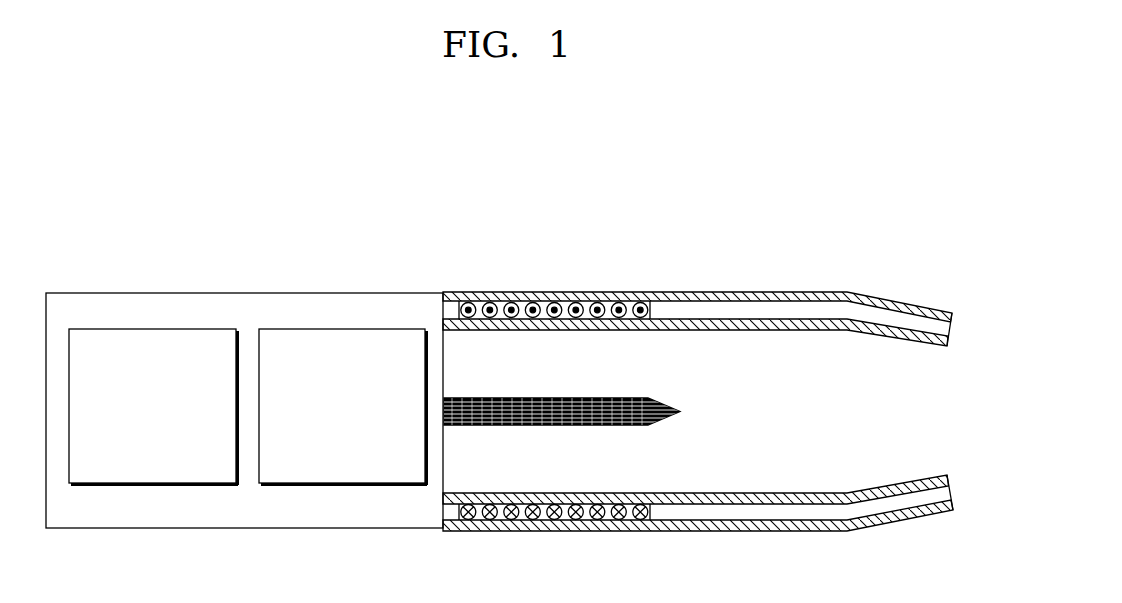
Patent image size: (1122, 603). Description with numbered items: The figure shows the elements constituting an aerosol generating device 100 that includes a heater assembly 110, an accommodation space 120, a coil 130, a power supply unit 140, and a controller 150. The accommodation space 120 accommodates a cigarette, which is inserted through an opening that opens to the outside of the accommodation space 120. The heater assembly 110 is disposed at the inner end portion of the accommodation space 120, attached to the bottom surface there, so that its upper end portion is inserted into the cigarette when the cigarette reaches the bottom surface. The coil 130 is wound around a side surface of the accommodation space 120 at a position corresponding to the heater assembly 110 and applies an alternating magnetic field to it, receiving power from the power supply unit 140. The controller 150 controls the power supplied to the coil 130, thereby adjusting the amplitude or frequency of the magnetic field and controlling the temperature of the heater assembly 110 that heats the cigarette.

The aerosol generating device 100 is at (731, 284).
The heater assembly 110 is at (660, 403).
The accommodation space 120 is at (798, 422).
The coil 130 is at (643, 306).
The power supply unit 140 is at (165, 328).
The controller 150 is at (353, 328).